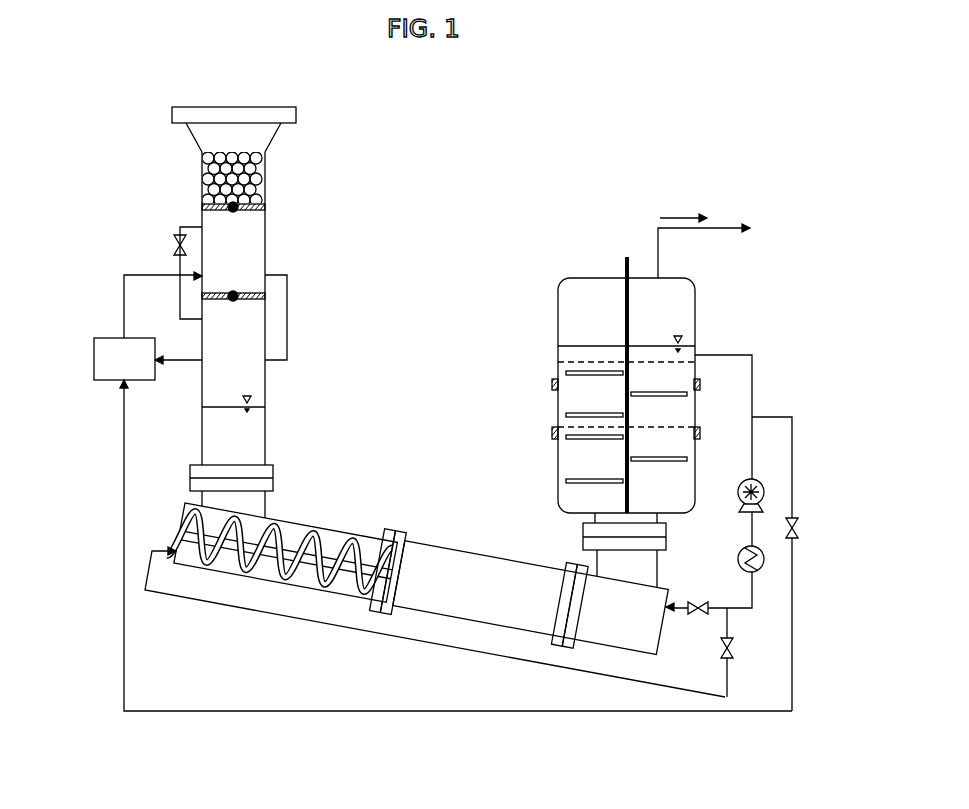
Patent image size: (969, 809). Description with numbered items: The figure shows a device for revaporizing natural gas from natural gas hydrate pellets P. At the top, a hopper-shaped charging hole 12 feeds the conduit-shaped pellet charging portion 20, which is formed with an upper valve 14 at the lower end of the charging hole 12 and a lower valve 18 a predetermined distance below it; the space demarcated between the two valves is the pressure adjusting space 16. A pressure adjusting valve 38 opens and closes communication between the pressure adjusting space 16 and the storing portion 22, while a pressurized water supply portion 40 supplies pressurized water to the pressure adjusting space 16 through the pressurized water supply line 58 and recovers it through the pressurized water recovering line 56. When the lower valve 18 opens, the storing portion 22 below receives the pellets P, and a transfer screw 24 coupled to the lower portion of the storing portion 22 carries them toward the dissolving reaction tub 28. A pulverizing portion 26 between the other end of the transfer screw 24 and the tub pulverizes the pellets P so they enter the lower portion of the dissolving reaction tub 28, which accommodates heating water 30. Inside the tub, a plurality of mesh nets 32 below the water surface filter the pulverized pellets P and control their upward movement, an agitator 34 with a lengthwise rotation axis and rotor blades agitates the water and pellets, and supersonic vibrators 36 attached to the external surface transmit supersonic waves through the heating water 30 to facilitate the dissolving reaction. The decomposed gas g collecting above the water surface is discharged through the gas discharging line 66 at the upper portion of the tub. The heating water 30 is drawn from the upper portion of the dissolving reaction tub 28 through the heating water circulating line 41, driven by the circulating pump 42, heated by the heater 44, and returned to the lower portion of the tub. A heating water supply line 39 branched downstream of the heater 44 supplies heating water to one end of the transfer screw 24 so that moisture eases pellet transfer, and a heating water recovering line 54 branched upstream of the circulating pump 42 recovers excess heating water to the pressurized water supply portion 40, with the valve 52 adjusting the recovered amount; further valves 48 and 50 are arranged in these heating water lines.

The charging hole 12 is at (275, 140).
The upper valve 14 is at (265, 207).
The pressure adjusting space 16 is at (235, 253).
The lower valve 18 is at (279, 276).
The pellet charging portion 20 is at (273, 204).
The storing portion 22 is at (265, 383).
The transfer screw 24 is at (330, 593).
The pulverizing portion 26 is at (477, 622).
The dissolving reaction tub 28 is at (550, 351).
The heating water 30 is at (692, 338).
The mesh net 32 is at (590, 417).
The agitator 34 is at (623, 297).
The supersonic vibrator 36 is at (700, 433).
The pressure adjusting valve 38 is at (175, 245).
The heating water supply line 39 is at (620, 680).
The pressurized water supply portion 40 is at (100, 383).
The heating water circulating line 41 is at (752, 375).
The circulating pump 42 is at (764, 489).
The heater 44 is at (764, 560).
The valve 48 is at (702, 600).
The valve 50 is at (733, 652).
The valve 52 is at (798, 528).
The heating water recovering line 54 is at (703, 713).
The pressurized water recovering line 56 is at (287, 318).
The pressurized water supply line 58 is at (124, 292).
The gas discharging line 66 is at (707, 231).
The natural gas hydrate pellets P is at (208, 157).
The decomposed gas g is at (738, 295).